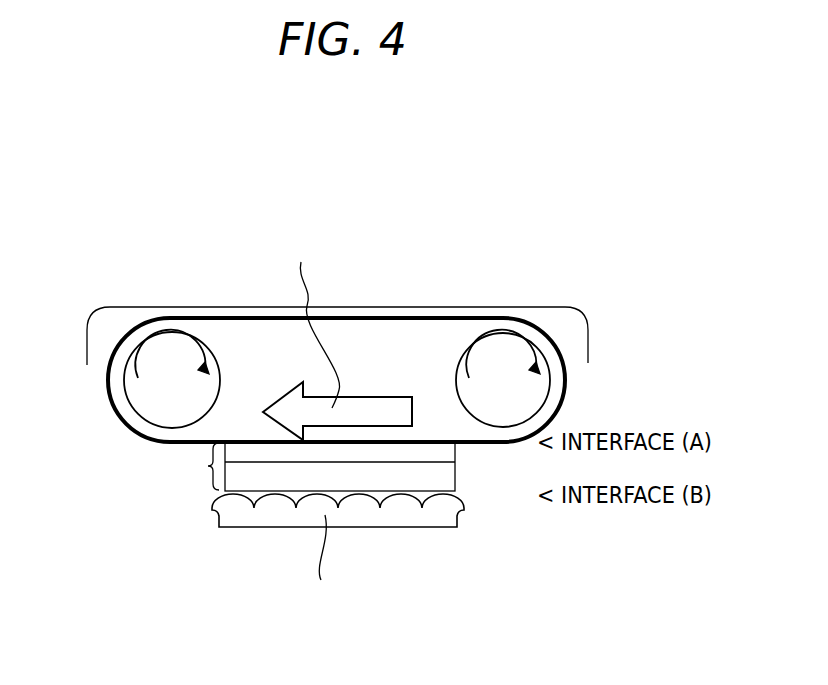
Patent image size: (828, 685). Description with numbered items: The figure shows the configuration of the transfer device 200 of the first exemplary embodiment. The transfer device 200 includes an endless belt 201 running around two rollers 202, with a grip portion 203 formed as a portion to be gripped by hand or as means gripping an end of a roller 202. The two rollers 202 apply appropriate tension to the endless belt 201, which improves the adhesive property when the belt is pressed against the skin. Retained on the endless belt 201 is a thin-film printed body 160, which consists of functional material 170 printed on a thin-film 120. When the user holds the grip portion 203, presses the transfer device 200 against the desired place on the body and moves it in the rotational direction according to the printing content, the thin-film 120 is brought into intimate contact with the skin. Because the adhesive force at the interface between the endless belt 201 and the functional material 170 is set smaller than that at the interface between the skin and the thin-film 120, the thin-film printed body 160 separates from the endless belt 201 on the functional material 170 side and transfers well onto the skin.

The transfer device 200 is at (222, 151).
The endless belt 201 is at (479, 318).
The rollers 202 is at (528, 392).
The grip portion 203 is at (392, 307).
The functional material 170 is at (447, 448).
The thin-film printed body 160 is at (207, 467).
The thin-film 120 is at (447, 476).